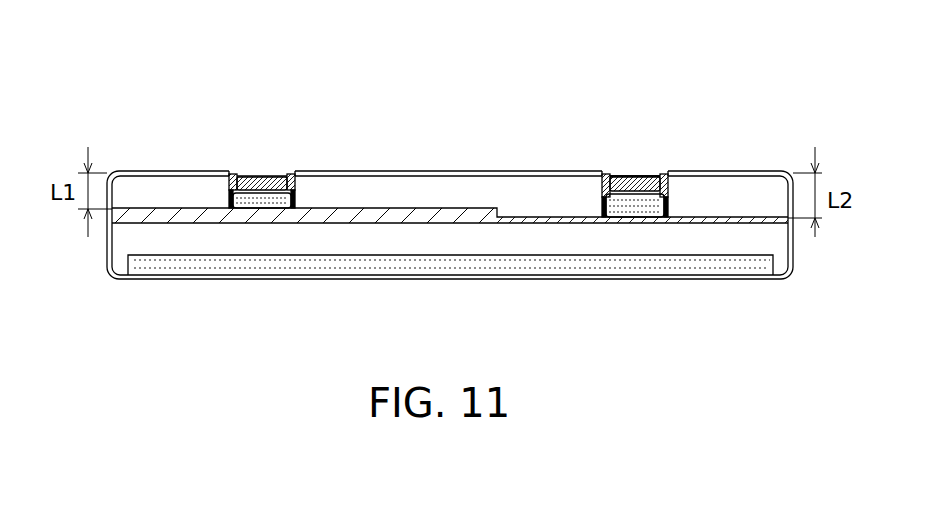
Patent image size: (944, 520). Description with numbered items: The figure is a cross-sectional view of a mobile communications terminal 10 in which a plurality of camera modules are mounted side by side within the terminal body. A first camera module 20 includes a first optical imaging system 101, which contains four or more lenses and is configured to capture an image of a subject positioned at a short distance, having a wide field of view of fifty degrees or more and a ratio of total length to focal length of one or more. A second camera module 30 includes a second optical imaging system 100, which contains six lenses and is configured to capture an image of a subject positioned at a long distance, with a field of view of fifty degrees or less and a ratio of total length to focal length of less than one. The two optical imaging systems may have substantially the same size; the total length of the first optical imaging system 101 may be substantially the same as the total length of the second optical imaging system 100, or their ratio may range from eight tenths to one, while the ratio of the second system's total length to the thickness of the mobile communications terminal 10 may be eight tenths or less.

The mobile communications terminal 10 is at (738, 170).
The first camera module 20 is at (247, 203).
The second camera module 30 is at (620, 208).
The first optical imaging system 101 is at (266, 175).
The second optical imaging system 100 is at (637, 175).